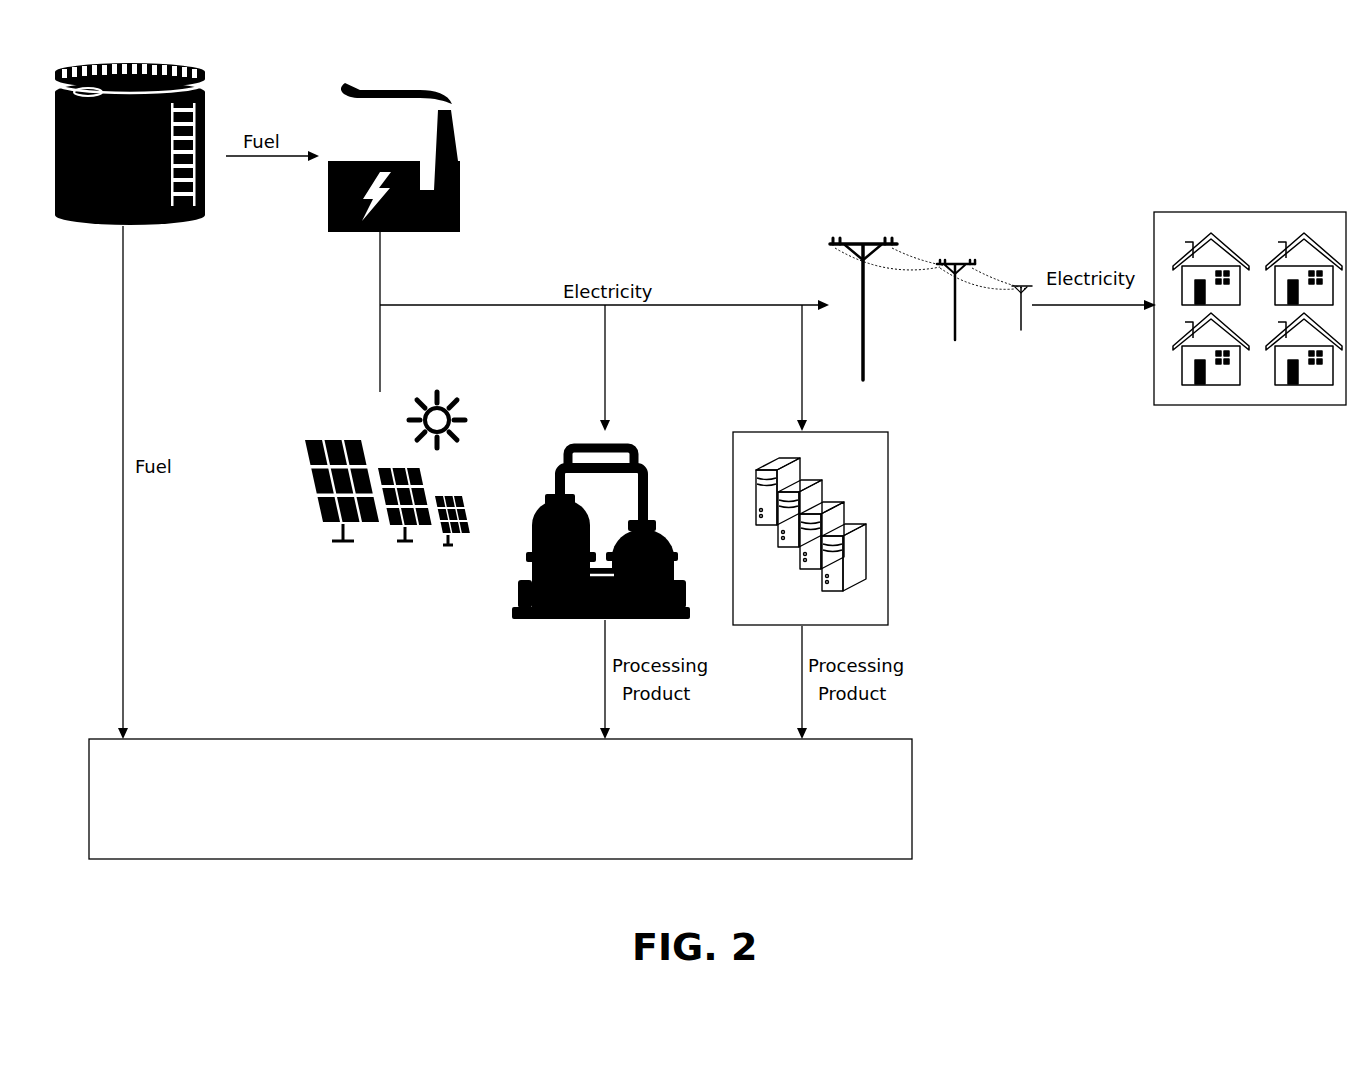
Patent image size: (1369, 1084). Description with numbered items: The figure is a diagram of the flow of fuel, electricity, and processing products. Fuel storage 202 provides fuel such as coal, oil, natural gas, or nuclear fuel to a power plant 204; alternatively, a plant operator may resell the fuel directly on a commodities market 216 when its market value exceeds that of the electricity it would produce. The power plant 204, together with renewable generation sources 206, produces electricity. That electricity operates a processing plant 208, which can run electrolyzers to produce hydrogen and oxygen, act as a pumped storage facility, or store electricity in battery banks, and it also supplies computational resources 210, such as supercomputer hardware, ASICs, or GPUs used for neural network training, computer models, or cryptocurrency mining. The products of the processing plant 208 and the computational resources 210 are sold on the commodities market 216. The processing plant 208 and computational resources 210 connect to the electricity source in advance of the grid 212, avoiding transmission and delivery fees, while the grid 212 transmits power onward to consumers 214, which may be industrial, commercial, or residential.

The fuel storage 202 is at (206, 58).
The power plant 204 is at (462, 157).
The renewable generation sources 206 is at (300, 445).
The processing plant 208 is at (648, 441).
The computational resources 210 is at (890, 464).
The grid 212 is at (960, 240).
The consumers 214 is at (1252, 212).
The commodities market 216 is at (914, 777).